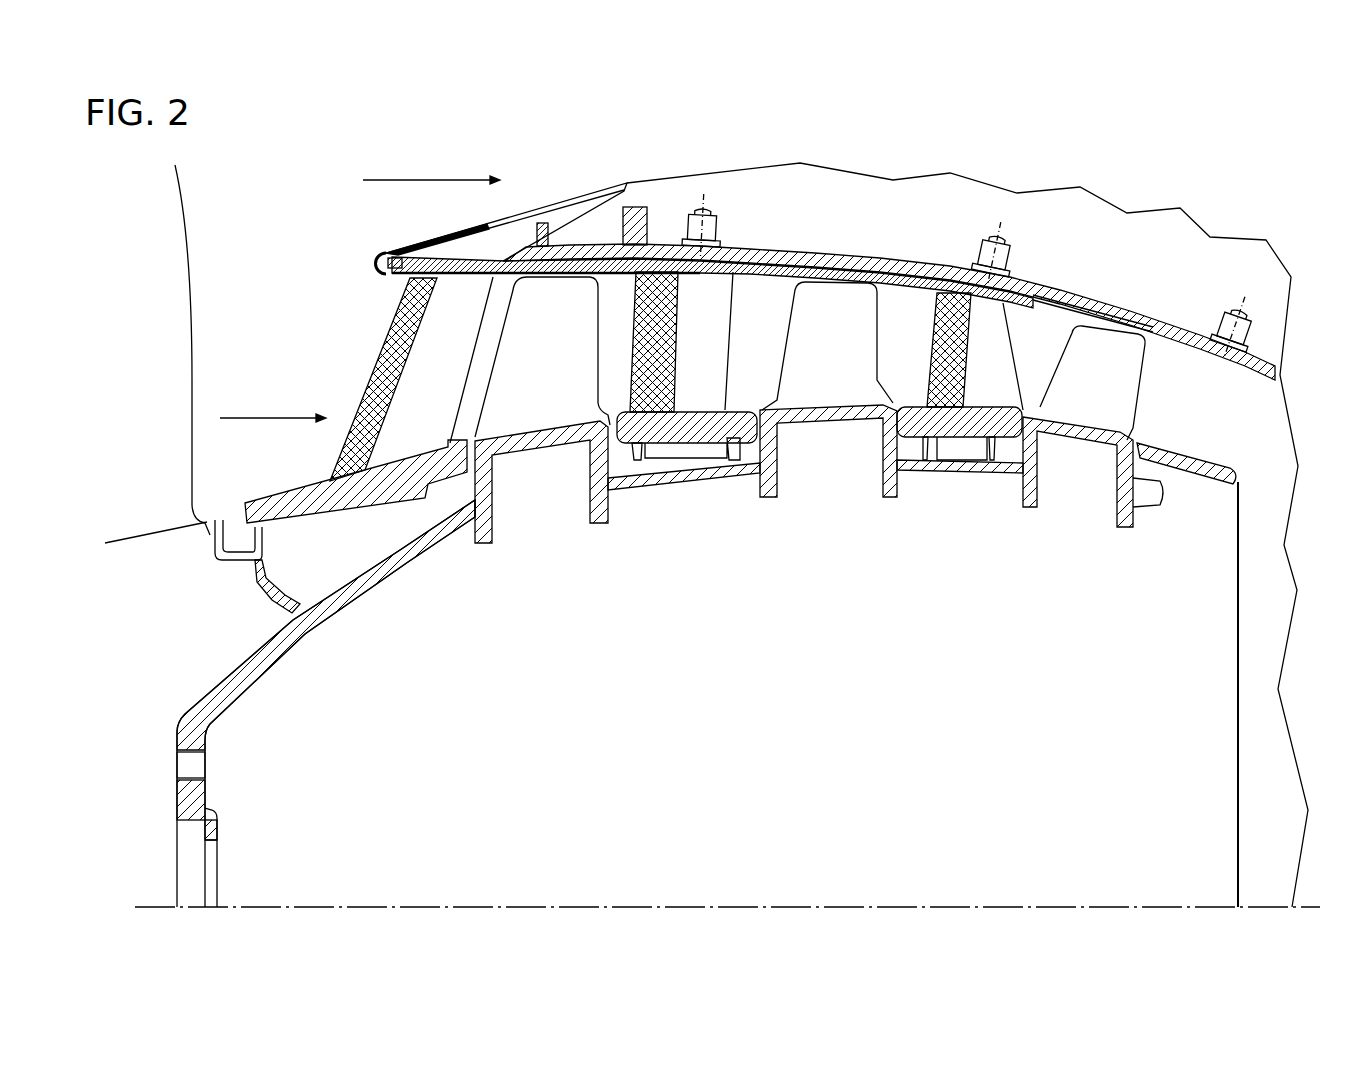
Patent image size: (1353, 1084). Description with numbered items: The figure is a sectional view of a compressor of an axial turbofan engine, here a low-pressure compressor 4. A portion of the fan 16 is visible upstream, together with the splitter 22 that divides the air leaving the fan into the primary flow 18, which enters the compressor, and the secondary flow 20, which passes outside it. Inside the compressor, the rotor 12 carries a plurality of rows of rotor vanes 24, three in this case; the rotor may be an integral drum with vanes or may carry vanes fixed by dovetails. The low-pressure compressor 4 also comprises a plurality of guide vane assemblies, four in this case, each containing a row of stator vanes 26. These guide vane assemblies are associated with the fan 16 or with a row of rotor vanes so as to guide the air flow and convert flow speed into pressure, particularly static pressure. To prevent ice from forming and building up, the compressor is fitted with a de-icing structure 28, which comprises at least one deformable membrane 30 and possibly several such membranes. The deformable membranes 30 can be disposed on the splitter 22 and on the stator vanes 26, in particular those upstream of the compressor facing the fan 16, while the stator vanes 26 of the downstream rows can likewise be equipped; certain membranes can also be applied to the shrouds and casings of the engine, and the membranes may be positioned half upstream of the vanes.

The low-pressure compressor 4 is at (1102, 176).
The rotor 12 is at (202, 727).
The fan 16 is at (137, 388).
The primary flow 18 is at (273, 402).
The secondary flow 20 is at (431, 168).
The splitter 22 is at (320, 258).
The rotor vanes 24 is at (534, 364).
The stator vanes 26 is at (414, 386).
The de-icing structure 28 is at (325, 213).
The deformable membrane 30 is at (378, 355).